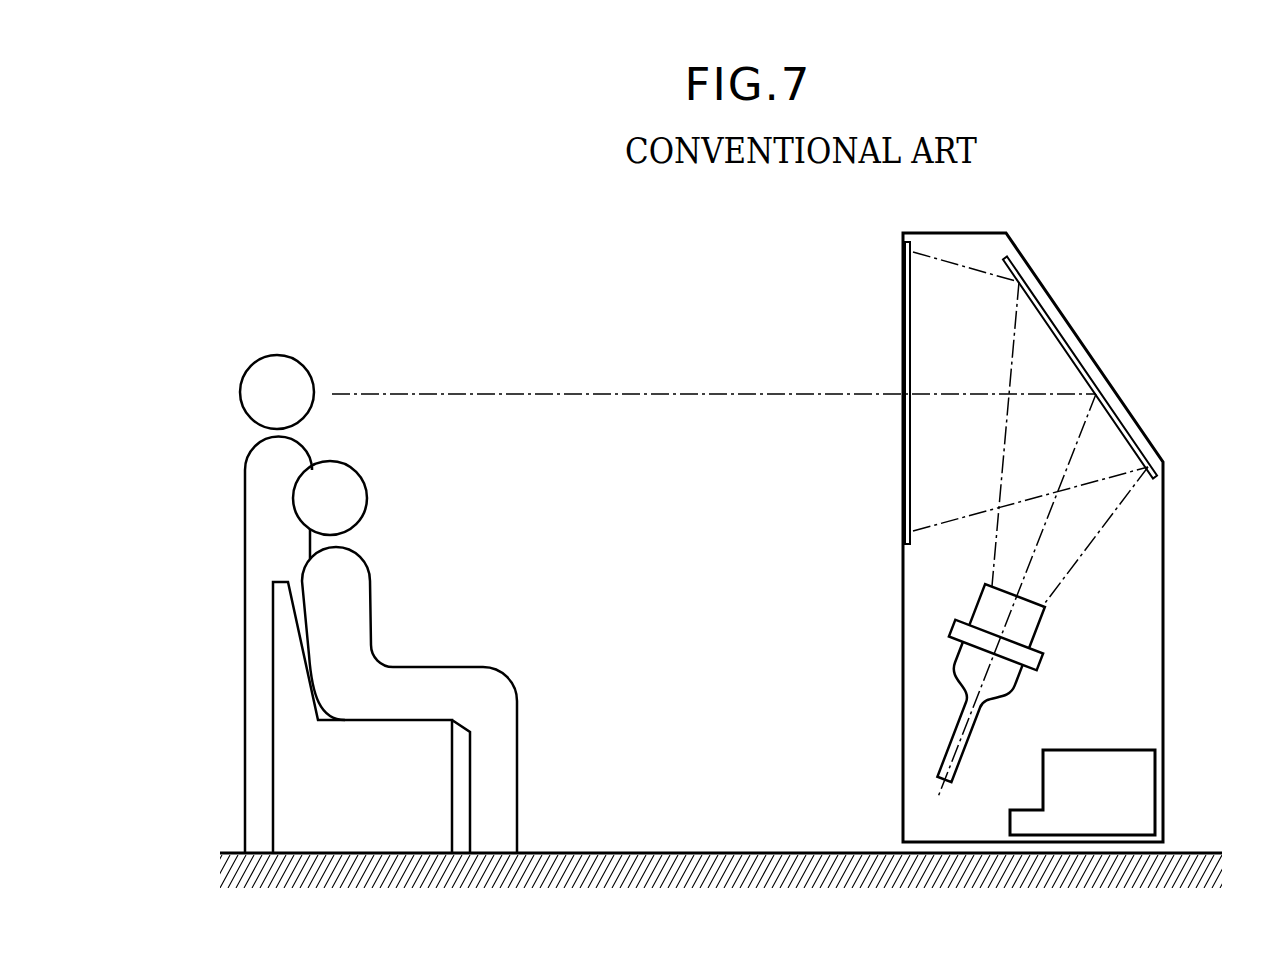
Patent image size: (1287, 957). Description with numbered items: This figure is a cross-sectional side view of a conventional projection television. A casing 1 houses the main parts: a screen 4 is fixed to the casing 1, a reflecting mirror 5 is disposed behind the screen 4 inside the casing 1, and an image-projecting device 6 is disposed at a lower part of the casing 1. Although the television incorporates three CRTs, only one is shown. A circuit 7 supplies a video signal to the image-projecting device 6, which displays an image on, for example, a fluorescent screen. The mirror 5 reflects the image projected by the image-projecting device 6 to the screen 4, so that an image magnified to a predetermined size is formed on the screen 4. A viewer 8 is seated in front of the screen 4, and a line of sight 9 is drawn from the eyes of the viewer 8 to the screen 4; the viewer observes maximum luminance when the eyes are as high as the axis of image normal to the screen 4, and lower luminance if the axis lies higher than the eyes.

The casing 1 is at (903, 805).
The screen 4 is at (905, 297).
The reflecting mirror 5 is at (1055, 328).
The image-projecting device 6 is at (957, 650).
The circuit 7 is at (1156, 797).
The viewer 8 is at (300, 361).
The line of sight 9 is at (492, 394).